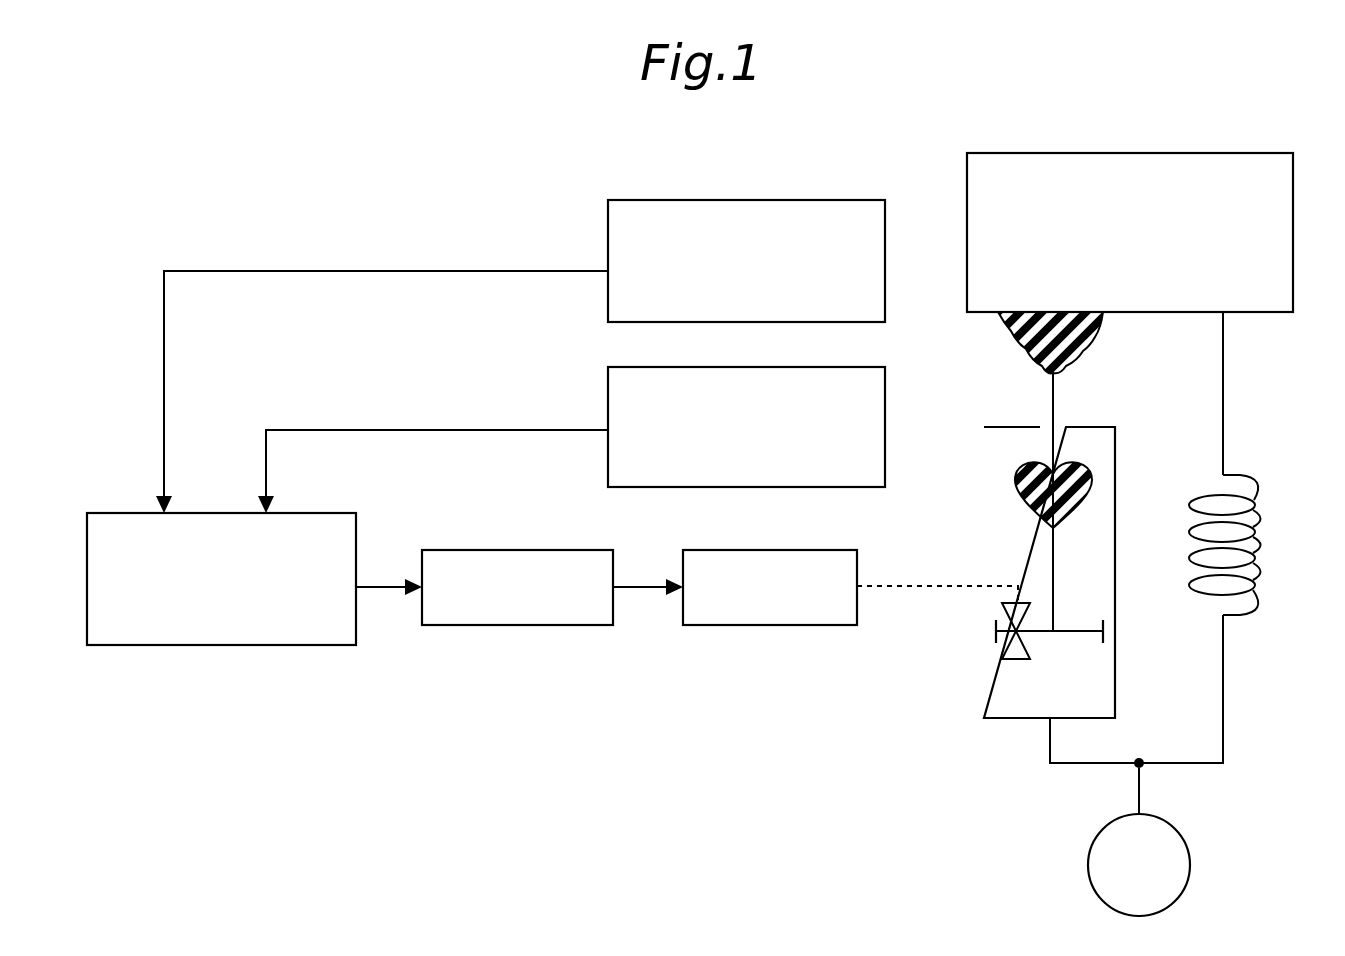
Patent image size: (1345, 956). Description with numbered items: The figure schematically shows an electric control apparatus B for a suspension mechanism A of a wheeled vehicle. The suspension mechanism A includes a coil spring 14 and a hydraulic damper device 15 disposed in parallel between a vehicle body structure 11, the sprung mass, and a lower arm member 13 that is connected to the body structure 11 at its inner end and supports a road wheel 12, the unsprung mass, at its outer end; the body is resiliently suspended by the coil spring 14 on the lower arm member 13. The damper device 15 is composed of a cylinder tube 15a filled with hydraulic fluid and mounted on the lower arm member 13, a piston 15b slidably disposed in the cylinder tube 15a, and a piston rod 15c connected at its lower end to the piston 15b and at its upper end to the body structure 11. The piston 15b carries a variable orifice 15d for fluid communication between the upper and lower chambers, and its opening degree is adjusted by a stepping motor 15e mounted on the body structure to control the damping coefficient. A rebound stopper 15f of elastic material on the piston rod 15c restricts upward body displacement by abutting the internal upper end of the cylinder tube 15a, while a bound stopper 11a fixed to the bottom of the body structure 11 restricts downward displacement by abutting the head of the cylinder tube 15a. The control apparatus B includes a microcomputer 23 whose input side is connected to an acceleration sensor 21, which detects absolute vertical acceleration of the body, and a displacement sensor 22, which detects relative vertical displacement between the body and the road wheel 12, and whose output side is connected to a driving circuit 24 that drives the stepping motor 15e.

The vehicle body structure 11 is at (1170, 153).
The bound stopper 11a is at (1090, 350).
The road wheel 12 is at (1110, 822).
The lower arm member 13 is at (1193, 763).
The coil spring 14 is at (1260, 548).
The hydraulic damper device 15 is at (972, 598).
The cylinder tube 15a is at (1022, 718).
The piston 15b is at (1070, 631).
The piston rod 15c is at (1058, 400).
The variable orifice 15d is at (1017, 662).
The stepping motor 15e is at (755, 550).
The rebound stopper 15f is at (1083, 466).
The acceleration sensor 21 is at (773, 200).
The displacement sensor 22 is at (778, 367).
The microcomputer 23 is at (300, 513).
The driving circuit 24 is at (477, 550).
The suspension mechanism A is at (978, 800).
The electric control apparatus B is at (474, 652).